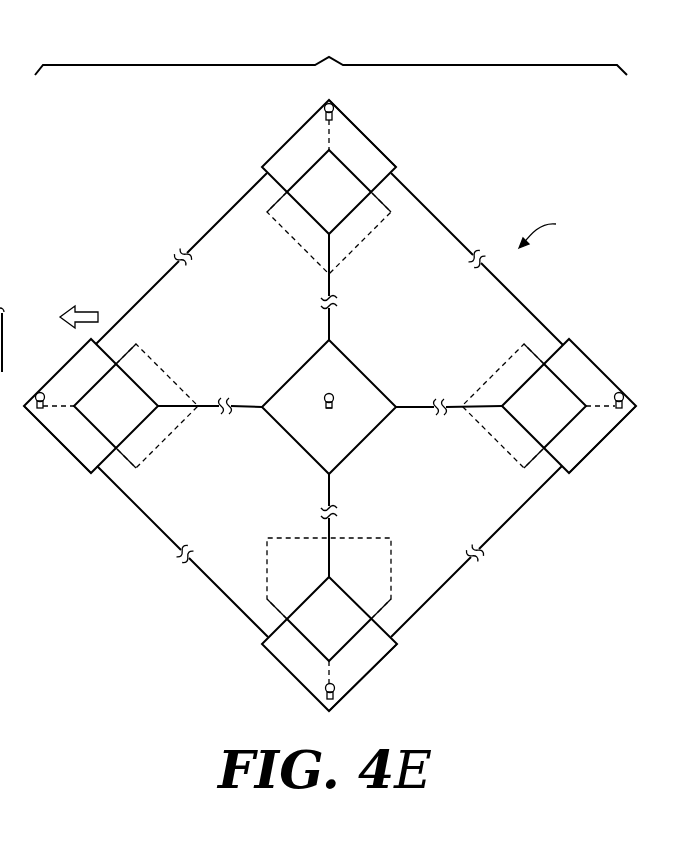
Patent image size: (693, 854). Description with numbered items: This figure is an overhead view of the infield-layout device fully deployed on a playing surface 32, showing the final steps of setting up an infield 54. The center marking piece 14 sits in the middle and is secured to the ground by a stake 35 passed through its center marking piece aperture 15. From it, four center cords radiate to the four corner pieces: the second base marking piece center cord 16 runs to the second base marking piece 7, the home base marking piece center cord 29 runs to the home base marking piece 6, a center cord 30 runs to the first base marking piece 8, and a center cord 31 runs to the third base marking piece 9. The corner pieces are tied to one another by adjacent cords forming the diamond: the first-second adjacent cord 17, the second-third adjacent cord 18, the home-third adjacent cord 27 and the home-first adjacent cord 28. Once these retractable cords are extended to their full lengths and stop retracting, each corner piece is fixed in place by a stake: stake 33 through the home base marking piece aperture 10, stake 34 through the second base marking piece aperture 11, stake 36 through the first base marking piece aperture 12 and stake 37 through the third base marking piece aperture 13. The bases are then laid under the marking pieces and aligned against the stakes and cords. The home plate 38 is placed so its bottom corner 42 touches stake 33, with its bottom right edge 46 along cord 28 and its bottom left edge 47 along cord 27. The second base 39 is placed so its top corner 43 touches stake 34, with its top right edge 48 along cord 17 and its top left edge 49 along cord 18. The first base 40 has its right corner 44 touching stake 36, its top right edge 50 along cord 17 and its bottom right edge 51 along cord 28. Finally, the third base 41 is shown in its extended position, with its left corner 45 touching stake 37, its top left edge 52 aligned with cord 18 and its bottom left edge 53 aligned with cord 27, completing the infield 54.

The home base marking piece 6 is at (364, 674).
The second base marking piece 7 is at (359, 164).
The first base marking piece 8 is at (597, 433).
The third base marking piece 9 is at (74, 433).
The home base marking piece aperture 10 is at (336, 708).
The second base marking piece aperture 11 is at (340, 120).
The first base marking piece aperture 12 is at (619, 408).
The third base marking piece aperture 13 is at (42, 409).
The center marking piece 14 is at (342, 426).
The center marking piece aperture 15 is at (327, 408).
The second base marking piece center cord 16 is at (331, 318).
The first-second adjacent cord 17 is at (513, 297).
The second-third adjacent cord 18 is at (213, 228).
The home-third adjacent cord 27 is at (148, 518).
The home-first adjacent cord 28 is at (505, 524).
The home base marking piece center cord 29 is at (331, 489).
The first base marking piece center cord 30 is at (409, 408).
The third base marking piece center cord 31 is at (244, 407).
The playing surface 32 is at (549, 231).
The stake 33 is at (326, 690).
The stake 34 is at (323, 106).
The stake 35 is at (325, 396).
The stake 36 is at (621, 393).
The stake 37 is at (37, 394).
The home plate 38 is at (378, 557).
The second base 39 is at (353, 238).
The first base 40 is at (488, 380).
The third base 41 is at (154, 371).
The bottom corner of home plate 42 is at (329, 662).
The top corner of second base 43 is at (329, 150).
The right corner of first base 44 is at (586, 405).
The left corner of third base 45 is at (74, 405).
The bottom right edge of home plate 46 is at (386, 610).
The bottom left edge of home plate 47 is at (268, 612).
The second base top right edge 48 is at (384, 200).
The second base top left edge 49 is at (277, 199).
The first base top right edge 50 is at (536, 354).
The first base bottom right edge 51 is at (533, 459).
The third base top left edge 52 is at (136, 344).
The third base bottom left edge 53 is at (125, 457).
The infield 54 is at (331, 54).